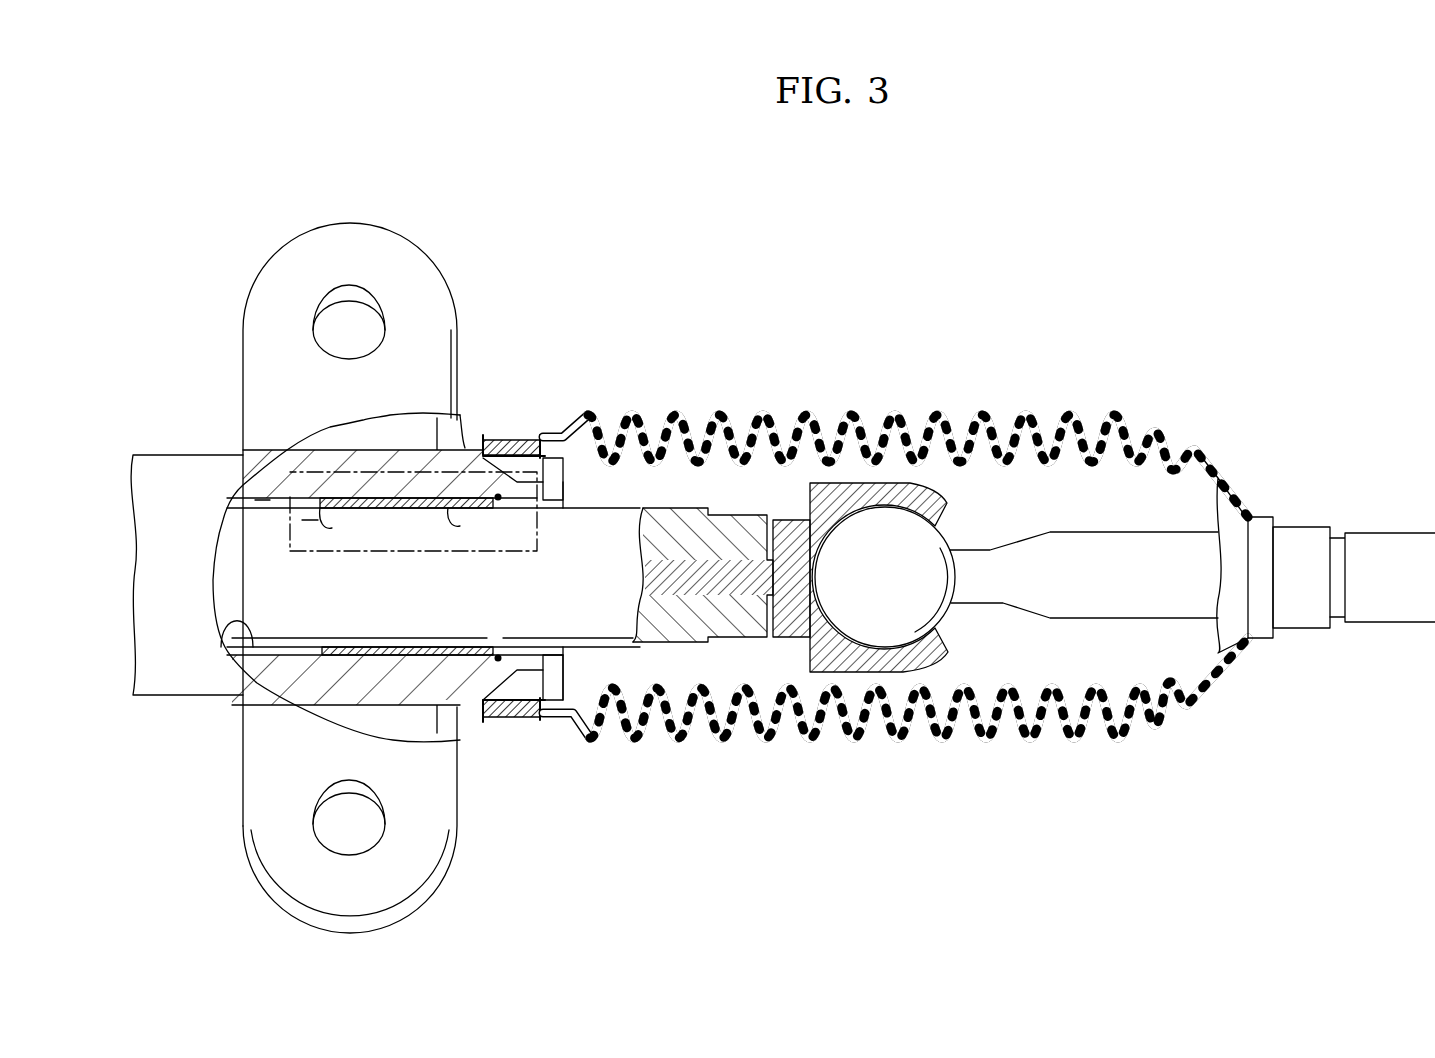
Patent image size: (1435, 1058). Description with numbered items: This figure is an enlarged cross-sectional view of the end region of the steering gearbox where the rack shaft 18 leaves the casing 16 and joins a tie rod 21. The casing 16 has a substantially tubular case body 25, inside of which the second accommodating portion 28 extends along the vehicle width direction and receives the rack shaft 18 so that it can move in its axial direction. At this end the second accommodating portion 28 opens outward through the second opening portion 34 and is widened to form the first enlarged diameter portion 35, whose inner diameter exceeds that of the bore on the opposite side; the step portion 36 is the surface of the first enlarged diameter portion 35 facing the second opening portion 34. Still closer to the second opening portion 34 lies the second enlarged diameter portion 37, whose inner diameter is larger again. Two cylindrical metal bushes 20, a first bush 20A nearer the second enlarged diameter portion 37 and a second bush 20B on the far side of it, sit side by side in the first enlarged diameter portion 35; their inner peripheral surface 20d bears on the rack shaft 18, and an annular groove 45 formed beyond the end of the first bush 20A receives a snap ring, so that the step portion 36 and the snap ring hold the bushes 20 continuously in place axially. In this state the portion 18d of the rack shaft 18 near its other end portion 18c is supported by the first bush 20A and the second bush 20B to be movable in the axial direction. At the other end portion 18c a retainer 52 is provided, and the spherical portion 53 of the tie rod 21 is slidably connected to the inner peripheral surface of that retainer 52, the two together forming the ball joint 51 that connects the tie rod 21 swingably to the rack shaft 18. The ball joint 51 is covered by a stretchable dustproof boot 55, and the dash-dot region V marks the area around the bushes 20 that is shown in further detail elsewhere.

The casing 16 is at (175, 456).
The rack shaft 18 is at (243, 450).
The other end portion 18c is at (722, 622).
The portion near the other end portion 18d is at (497, 719).
The bush 20 is at (445, 418).
The first bush 20A is at (410, 498).
The second bush 20B is at (372, 498).
The inner peripheral surface 20d is at (440, 512).
The tie rod 21 is at (1380, 627).
The case body 25 is at (129, 658).
The second accommodating portion 28 is at (218, 625).
The second opening portion 34 is at (573, 665).
The first enlarged diameter portion 35 is at (262, 505).
The step portion 36 is at (310, 522).
The second enlarged diameter portion 37 is at (588, 450).
The annular groove 45 is at (523, 445).
The ball joint 51 is at (886, 675).
The retainer 52 is at (938, 654).
The spherical portion 53 is at (890, 632).
The dustproof boot 55 is at (908, 577).
The region V is at (470, 440).